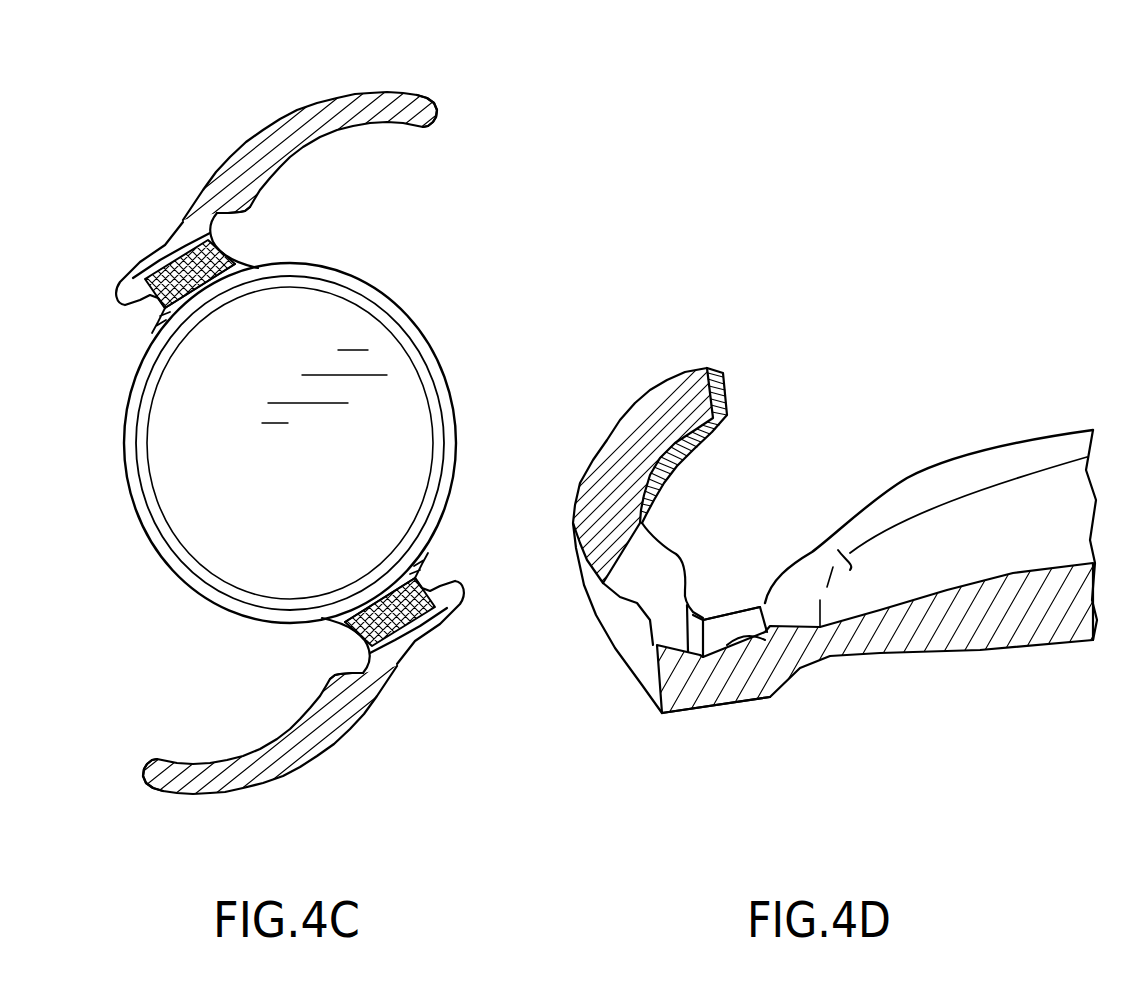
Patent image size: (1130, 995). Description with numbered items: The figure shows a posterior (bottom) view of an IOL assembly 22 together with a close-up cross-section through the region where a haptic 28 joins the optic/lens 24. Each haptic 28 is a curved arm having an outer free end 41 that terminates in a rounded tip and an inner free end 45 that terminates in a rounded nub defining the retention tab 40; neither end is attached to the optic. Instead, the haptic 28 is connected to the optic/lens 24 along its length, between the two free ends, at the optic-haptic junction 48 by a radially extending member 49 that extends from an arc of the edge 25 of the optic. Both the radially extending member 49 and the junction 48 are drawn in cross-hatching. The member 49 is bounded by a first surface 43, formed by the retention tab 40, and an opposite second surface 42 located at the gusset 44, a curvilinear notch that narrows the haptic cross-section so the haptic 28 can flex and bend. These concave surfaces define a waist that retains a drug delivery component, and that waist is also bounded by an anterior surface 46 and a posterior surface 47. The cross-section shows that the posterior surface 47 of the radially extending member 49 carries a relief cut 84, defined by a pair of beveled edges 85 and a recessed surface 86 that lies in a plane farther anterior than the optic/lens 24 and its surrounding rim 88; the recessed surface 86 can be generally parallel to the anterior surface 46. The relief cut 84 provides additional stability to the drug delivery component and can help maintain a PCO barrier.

In FIG. 4C, the IOL assembly 22 is at (356, 455).
In FIG. 4D, the IOL assembly 22 is at (845, 485).
In FIG. 4C, the optic/lens 24 is at (412, 406).
In FIG. 4D, the optic/lens 24 is at (995, 503).
In FIG. 4C, the edge 25 is at (145, 537).
In FIG. 4D, the edge 25 is at (877, 487).
In FIG. 4C, the haptic 28 is at (325, 455).
In FIG. 4D, the haptic 28 is at (697, 485).
In FIG. 4C, the retention tab 40 is at (291, 449).
In FIG. 4C, the outer free end 41 is at (439, 109).
In FIG. 4D, the outer free end 41 is at (705, 367).
In FIG. 4C, the second surface 42 is at (242, 261).
In FIG. 4C, the first surface 43 is at (153, 308).
In FIG. 4C, the gusset 44 is at (221, 222).
In FIG. 4C, the inner free end 45 is at (118, 300).
In FIG. 4D, the anterior surface 46 is at (683, 713).
In FIG. 4C, the posterior surface 47 is at (294, 449).
In FIG. 4D, the posterior surface 47 is at (662, 613).
In FIG. 4C, the optic-haptic junction 48 is at (177, 263).
In FIG. 4C, the radially extending member 49 is at (186, 272).
In FIG. 4D, the radially extending member 49 is at (750, 687).
In FIG. 4D, the relief cut 84 is at (732, 583).
In FIG. 4D, the beveled edges 85 is at (698, 612).
In FIG. 4D, the recessed surface 86 is at (765, 641).
In FIG. 4D, the rim 88 is at (814, 560).